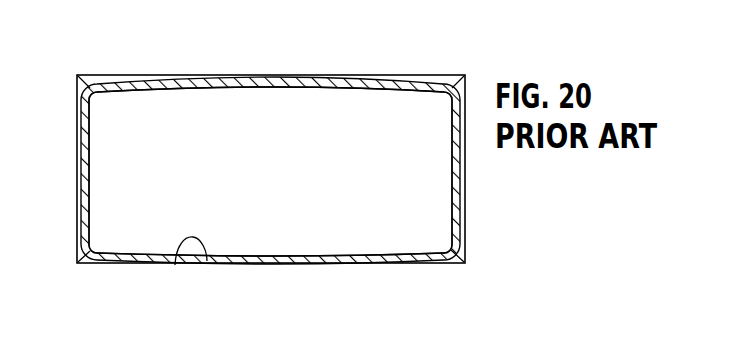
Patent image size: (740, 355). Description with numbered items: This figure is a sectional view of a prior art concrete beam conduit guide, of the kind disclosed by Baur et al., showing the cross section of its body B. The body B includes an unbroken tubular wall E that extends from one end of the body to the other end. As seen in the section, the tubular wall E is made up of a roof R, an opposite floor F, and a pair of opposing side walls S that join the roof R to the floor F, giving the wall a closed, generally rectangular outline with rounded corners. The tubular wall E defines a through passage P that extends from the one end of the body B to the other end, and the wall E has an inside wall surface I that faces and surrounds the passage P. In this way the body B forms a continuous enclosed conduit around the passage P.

The side walls S is at (78, 200).
The body B is at (462, 207).
The through passage P is at (268, 127).
The roof R is at (133, 80).
The floor F is at (122, 263).
The inside wall surface I is at (175, 265).
The tubular wall E is at (461, 264).